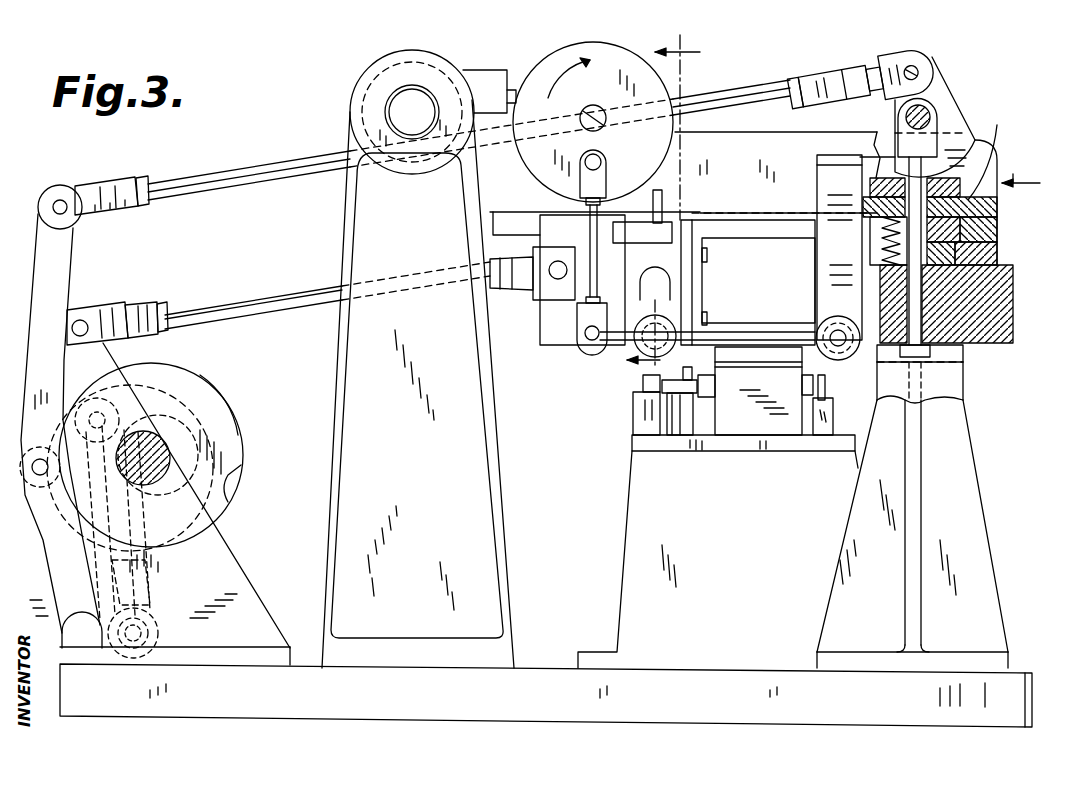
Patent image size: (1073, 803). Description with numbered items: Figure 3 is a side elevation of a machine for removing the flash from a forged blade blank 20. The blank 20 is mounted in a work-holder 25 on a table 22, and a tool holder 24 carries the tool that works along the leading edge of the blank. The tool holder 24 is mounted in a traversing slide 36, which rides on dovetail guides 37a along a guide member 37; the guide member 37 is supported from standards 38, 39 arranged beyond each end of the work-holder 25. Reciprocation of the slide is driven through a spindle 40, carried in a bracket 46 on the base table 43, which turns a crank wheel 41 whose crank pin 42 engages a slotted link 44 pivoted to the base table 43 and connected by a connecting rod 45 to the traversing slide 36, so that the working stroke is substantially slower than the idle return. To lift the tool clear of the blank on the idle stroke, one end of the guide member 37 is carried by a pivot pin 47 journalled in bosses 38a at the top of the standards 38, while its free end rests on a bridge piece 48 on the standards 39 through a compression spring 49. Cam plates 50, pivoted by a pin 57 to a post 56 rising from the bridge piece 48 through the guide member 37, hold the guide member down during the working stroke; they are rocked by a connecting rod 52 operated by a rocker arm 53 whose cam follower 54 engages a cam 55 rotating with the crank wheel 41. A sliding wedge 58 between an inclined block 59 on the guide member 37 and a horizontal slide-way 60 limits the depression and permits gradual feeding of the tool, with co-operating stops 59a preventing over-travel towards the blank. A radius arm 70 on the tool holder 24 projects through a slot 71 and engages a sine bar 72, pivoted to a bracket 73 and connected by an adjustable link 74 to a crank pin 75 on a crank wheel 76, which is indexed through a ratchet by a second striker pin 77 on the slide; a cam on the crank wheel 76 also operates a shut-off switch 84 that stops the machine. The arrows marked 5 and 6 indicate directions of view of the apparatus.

The direction arrow 5 is at (1021, 167).
The direction arrow / valve 6 is at (674, 239).
The blade blank 20 is at (705, 348).
The table 22 is at (643, 505).
The tool holder 24 is at (665, 297).
The work-holder 25 is at (753, 417).
The traversing slide 36 is at (533, 283).
The guide member 37 is at (797, 141).
The dovetail guides 37a is at (807, 230).
The standards 38 is at (360, 383).
The bosses 38a is at (352, 106).
The standards 39 is at (860, 538).
The spindle 40 is at (150, 431).
The crank wheel 41 is at (227, 492).
The crank pin 42 is at (135, 380).
The base table 43 is at (553, 687).
The slotted link 44 is at (160, 577).
The connecting rod 45 is at (297, 290).
The bracket 46 is at (178, 504).
The pivot pin 47 is at (396, 100).
The bridge piece 48 is at (927, 317).
The compression spring 49 is at (880, 250).
The cam plates 50 is at (950, 127).
The connecting rod 52 is at (273, 165).
The rocker arm 53 is at (72, 262).
The cam follower 54 is at (35, 455).
The cam 55 is at (210, 463).
The post 56 is at (962, 352).
The pin 57 is at (927, 110).
The sliding wedge 58 is at (990, 250).
The block 59 is at (988, 227).
The co-operating stops 59a is at (1001, 150).
The horizontal slide-way 60 is at (940, 307).
The radius arm 70 is at (662, 318).
The slot 71 is at (650, 290).
The sine bar 72 is at (625, 340).
The bracket 73 is at (520, 95).
The adjustable link 74 is at (590, 278).
The crank pin 75 is at (607, 163).
The crank wheel 76 is at (553, 190).
The second striker pin 77 is at (682, 194).
The shut-off switch 84 is at (494, 82).